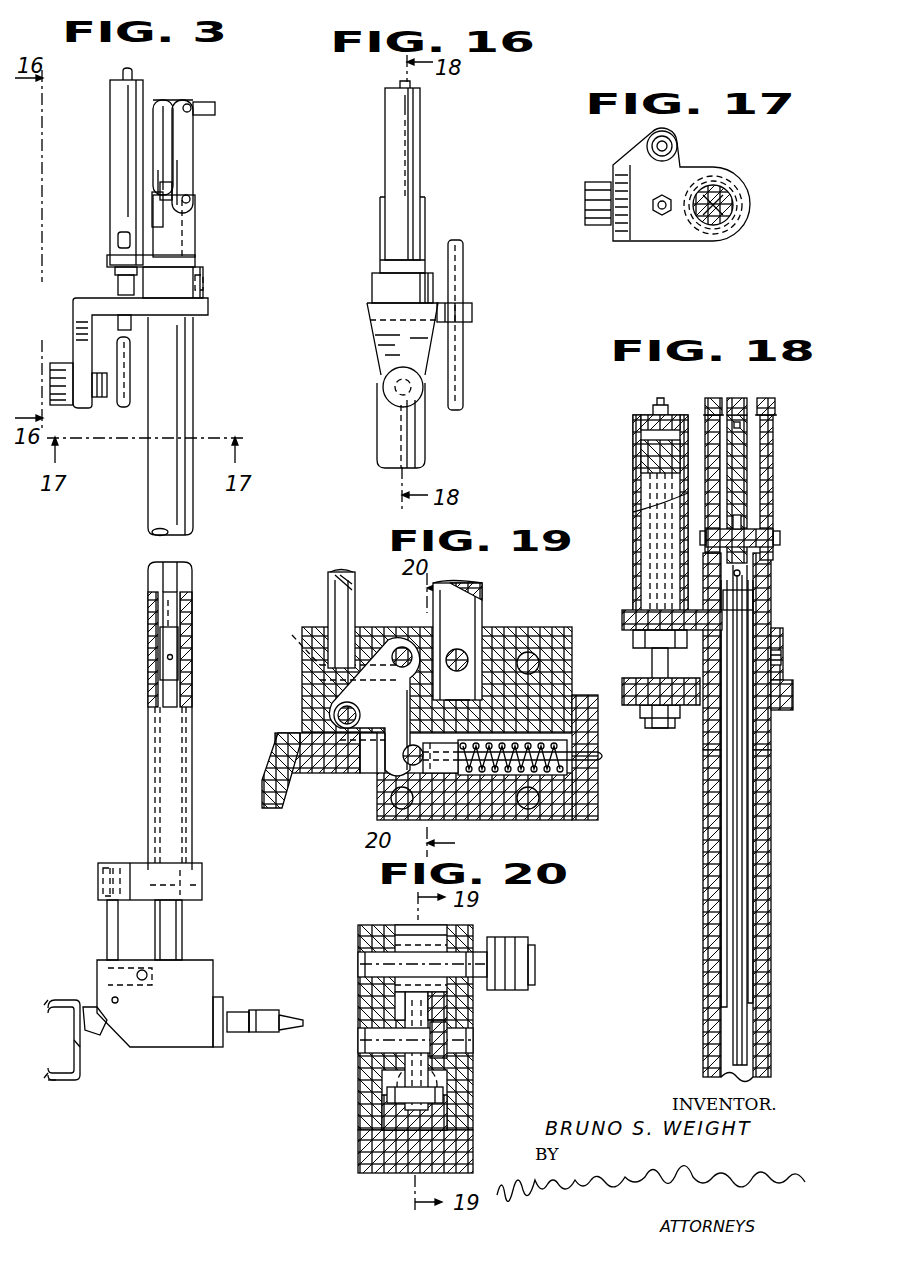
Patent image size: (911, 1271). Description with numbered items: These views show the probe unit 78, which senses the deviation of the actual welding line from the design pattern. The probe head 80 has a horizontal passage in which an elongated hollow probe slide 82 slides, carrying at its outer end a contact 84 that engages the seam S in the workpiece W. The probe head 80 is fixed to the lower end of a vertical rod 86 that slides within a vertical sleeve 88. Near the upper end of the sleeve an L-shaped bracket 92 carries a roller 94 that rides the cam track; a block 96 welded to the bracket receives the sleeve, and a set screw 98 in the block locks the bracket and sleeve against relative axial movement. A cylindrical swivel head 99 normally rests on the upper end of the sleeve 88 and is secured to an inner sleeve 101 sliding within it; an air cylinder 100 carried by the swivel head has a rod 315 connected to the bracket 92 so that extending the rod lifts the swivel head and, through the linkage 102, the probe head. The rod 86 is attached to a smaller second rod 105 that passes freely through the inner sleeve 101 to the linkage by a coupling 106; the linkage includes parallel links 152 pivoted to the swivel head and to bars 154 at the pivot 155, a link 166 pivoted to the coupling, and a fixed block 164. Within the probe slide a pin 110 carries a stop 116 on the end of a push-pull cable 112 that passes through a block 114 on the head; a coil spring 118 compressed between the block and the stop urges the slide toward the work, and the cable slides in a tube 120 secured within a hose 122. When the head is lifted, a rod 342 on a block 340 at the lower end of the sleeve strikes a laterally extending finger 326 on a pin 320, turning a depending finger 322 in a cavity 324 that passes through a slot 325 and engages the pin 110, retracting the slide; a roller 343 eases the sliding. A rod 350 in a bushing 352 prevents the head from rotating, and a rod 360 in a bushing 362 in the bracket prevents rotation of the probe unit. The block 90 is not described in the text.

In FIG. 3, the probe unit 78 is at (115, 760).
In FIG. 3, the probe head 80 is at (205, 985).
In FIG. 19, the probe head 80 is at (555, 663).
In FIG. 20, the probe head 80 is at (375, 940).
In FIG. 3, the probe slide 82 is at (104, 1031).
In FIG. 19, the probe slide 82 is at (345, 775).
In FIG. 20, the probe slide 82 is at (455, 1120).
In FIG. 3, the contact 84 is at (79, 1040).
In FIG. 19, the contact 84 is at (275, 790).
In FIG. 3, the vertical rod 86 is at (182, 940).
In FIG. 19, the vertical rod 86 is at (482, 612).
In FIG. 3, the vertical sleeve 88 is at (185, 508).
In FIG. 16, the vertical sleeve 88 is at (418, 447).
In FIG. 17, the vertical sleeve 88 is at (727, 222).
In FIG. 18, the vertical sleeve 88 is at (703, 965).
In FIG. 3, the clamp block 90 is at (205, 893).
In FIG. 3, the L-shaped bracket 92 is at (90, 303).
In FIG. 16, the L-shaped bracket 92 is at (385, 347).
In FIG. 17, the L-shaped bracket 92 is at (648, 232).
In FIG. 18, the L-shaped bracket 92 is at (781, 710).
In FIG. 3, the roller 94 is at (58, 383).
In FIG. 16, the roller 94 is at (393, 393).
In FIG. 17, the roller 94 is at (590, 200).
In FIG. 3, the block 96 is at (203, 268).
In FIG. 16, the block 96 is at (380, 283).
In FIG. 17, the block 96 is at (742, 177).
In FIG. 18, the block 96 is at (784, 680).
In FIG. 3, the set screw 98 is at (204, 287).
In FIG. 17, the set screw 98 is at (740, 195).
In FIG. 18, the set screw 98 is at (782, 657).
In FIG. 3, the swivel head 99 is at (190, 233).
In FIG. 16, the swivel head 99 is at (428, 222).
In FIG. 18, the swivel head 99 is at (769, 580).
In FIG. 3, the air cylinder 100 is at (113, 158).
In FIG. 16, the air cylinder 100 is at (416, 138).
In FIG. 18, the air cylinder 100 is at (633, 525).
In FIG. 18, the inner sleeve 101 is at (750, 750).
In FIG. 3, the linkage 102 is at (175, 94).
In FIG. 18, the linkage 102 is at (701, 395).
In FIG. 3, the second rod 105 is at (176, 610).
In FIG. 18, the second rod 105 is at (735, 845).
In FIG. 18, the coupling 106 is at (771, 598).
In FIG. 19, the pin 110 is at (414, 744).
In FIG. 20, the pin 110 is at (445, 1093).
In FIG. 3, the push-pull cable 112 is at (298, 1031).
In FIG. 19, the push-pull cable 112 is at (592, 762).
In FIG. 19, the block 114 is at (585, 698).
In FIG. 19, the stop 116 is at (445, 775).
In FIG. 19, the coil spring 118 is at (500, 772).
In FIG. 3, the tube 120 is at (288, 1030).
In FIG. 3, the hose 122 is at (262, 1015).
In FIG. 3, the parallel links 152 is at (191, 138).
In FIG. 18, the parallel links 152 is at (767, 448).
In FIG. 3, the bars 154 is at (208, 111).
In FIG. 18, the bars 154 is at (770, 418).
In FIG. 3, the pivot 155 is at (190, 105).
In FIG. 18, the fixed block 164 is at (740, 500).
In FIG. 3, the link 166 is at (166, 162).
In FIG. 18, the link 166 is at (740, 398).
In FIG. 3, the rod 315 is at (122, 283).
In FIG. 18, the rod 315 is at (654, 663).
In FIG. 3, the pin 320 is at (142, 969).
In FIG. 19, the pin 320 is at (402, 646).
In FIG. 20, the pin 320 is at (358, 962).
In FIG. 19, the depending finger 322 is at (398, 692).
In FIG. 20, the depending finger 322 is at (405, 1060).
In FIG. 19, the cavity 324 is at (330, 695).
In FIG. 20, the cavity 324 is at (447, 1005).
In FIG. 19, the slot 325 is at (375, 733).
In FIG. 3, the laterally extending finger 326 is at (127, 985).
In FIG. 19, the laterally extending finger 326 is at (287, 641).
In FIG. 20, the laterally extending finger 326 is at (515, 945).
In FIG. 3, the block 340 is at (136, 863).
In FIG. 3, the rod 342 is at (107, 935).
In FIG. 19, the rod 342 is at (345, 570).
In FIG. 19, the roller 343 is at (334, 715).
In FIG. 20, the roller 343 is at (473, 1040).
In FIG. 19, the rod 350 is at (328, 612).
In FIG. 3, the bushing 352 is at (101, 871).
In FIG. 16, the rod 360 is at (463, 363).
In FIG. 17, the rod 360 is at (675, 142).
In FIG. 16, the bushing 362 is at (472, 311).
In FIG. 3, the seam S is at (77, 1047).
In FIG. 3, the workpiece W is at (50, 1083).